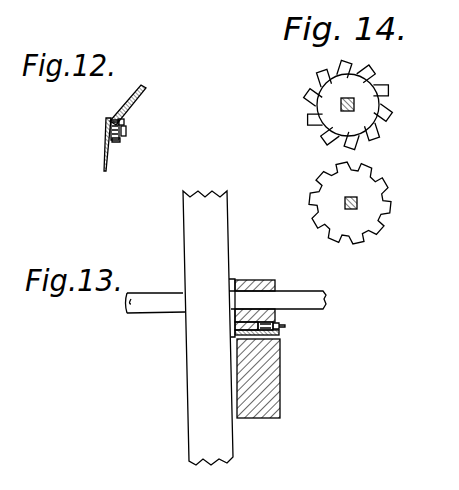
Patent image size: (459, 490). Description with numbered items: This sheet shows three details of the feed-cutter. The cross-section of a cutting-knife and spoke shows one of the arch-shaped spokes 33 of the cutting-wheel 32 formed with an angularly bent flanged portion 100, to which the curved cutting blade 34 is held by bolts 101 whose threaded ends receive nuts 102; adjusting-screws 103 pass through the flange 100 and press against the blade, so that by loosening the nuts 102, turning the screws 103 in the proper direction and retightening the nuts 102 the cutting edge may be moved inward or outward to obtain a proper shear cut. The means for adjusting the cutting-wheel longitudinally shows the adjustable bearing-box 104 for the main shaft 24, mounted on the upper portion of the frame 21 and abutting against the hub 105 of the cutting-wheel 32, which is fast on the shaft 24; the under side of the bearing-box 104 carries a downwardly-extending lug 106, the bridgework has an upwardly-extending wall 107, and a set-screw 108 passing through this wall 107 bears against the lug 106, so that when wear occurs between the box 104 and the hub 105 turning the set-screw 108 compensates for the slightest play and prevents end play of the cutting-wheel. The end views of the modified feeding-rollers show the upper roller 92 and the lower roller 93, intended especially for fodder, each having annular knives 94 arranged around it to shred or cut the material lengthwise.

In FIG. 13, the upper portion of the frame 21 is at (286, 369).
In FIG. 13, the main shaft 24 is at (293, 295).
In FIG. 13, the cutting-wheel 32 is at (217, 232).
In FIG. 12, the spokes 33 is at (136, 99).
In FIG. 12, the cutting blades 34 is at (104, 155).
In FIG. 14, the upper feed-roller 92 is at (358, 88).
In FIG. 14, the lower feed-roller 93 is at (365, 195).
In FIG. 14, the knives 94 is at (308, 119).
In FIG. 12, the flanged portion 100 is at (120, 135).
In FIG. 12, the bolts 101 is at (125, 122).
In FIG. 12, the nuts 102 is at (127, 129).
In FIG. 12, the adjusting-screws 103 is at (122, 136).
In FIG. 13, the bearing-box 104 is at (260, 279).
In FIG. 13, the hub 105 is at (231, 280).
In FIG. 13, the lug 106 is at (258, 323).
In FIG. 13, the wall 107 is at (279, 332).
In FIG. 13, the set-screw 108 is at (279, 325).